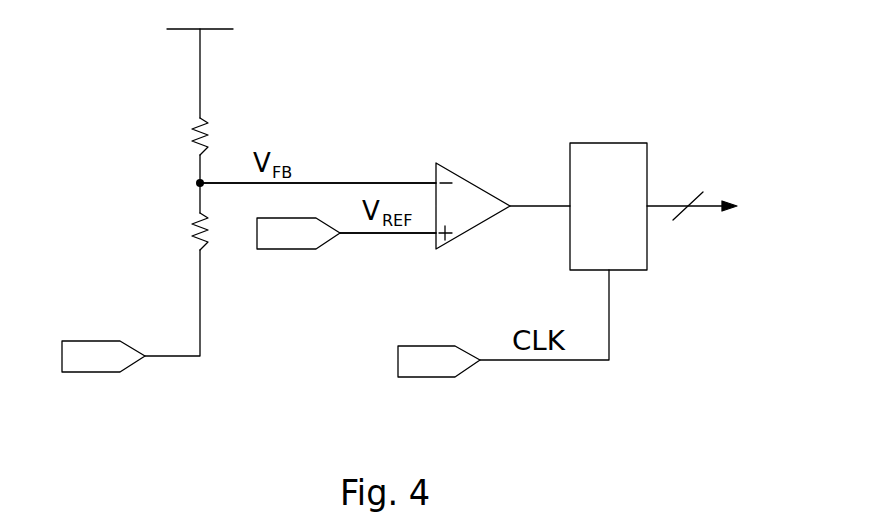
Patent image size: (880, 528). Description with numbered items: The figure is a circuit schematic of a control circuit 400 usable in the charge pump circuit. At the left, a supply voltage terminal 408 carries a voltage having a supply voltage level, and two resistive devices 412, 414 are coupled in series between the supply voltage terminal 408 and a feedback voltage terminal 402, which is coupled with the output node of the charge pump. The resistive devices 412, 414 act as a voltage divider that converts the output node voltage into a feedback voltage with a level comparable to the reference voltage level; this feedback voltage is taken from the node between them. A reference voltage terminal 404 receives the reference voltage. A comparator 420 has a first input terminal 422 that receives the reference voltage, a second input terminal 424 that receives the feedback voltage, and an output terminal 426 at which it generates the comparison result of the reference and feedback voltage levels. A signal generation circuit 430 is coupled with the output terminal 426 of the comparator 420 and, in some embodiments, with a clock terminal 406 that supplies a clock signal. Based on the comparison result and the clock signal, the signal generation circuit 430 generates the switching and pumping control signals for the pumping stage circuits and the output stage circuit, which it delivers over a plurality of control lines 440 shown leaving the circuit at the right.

The control circuit 400 is at (655, 76).
The feedback voltage terminal 402 is at (89, 346).
The reference voltage terminal 404 is at (284, 246).
The clock terminal 406 is at (423, 370).
The supply voltage terminal 408 is at (170, 28).
The resistive device 412 is at (196, 124).
The resistive device 414 is at (196, 220).
The comparator 420 is at (467, 184).
The first input terminal 422 is at (403, 235).
The second input terminal 424 is at (403, 182).
The output terminal 426 is at (531, 204).
The signal generation circuit 430 is at (584, 150).
The control lines 440 is at (682, 205).